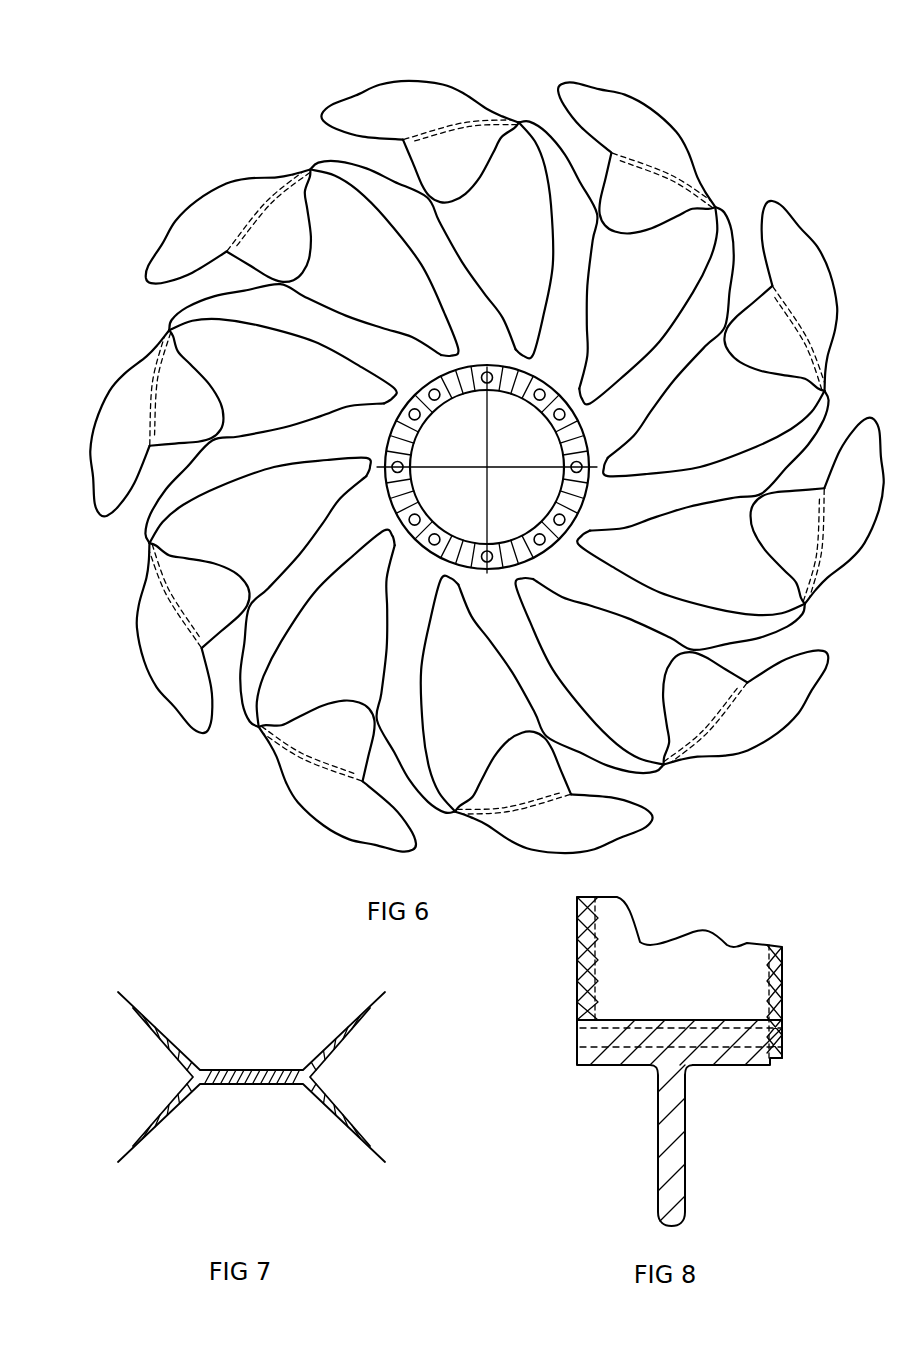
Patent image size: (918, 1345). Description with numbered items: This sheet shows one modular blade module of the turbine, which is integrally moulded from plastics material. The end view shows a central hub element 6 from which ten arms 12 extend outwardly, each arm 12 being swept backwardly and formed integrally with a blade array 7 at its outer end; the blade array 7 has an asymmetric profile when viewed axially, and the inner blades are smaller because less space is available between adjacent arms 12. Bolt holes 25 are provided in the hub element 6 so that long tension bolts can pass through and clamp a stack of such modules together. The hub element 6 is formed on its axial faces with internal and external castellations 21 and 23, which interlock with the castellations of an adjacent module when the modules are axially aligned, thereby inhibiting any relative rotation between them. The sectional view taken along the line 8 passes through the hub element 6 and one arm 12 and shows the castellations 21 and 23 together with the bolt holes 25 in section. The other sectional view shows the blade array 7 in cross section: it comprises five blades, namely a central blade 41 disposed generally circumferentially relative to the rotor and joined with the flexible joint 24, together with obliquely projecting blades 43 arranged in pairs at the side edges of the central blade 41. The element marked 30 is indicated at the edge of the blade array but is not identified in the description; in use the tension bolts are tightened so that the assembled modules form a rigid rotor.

In FIG. 8, the hub element 6 is at (632, 1068).
In FIG. 6, the blade array 7 is at (365, 92).
In FIG. 6, the section line 8— 8 is at (487, 467).
In FIG. 6, the arm 12 is at (458, 293).
In FIG. 8, the arm 12 is at (682, 1150).
In FIG. 8, the internal castellation 21 is at (585, 958).
In FIG. 6, the external castellation 23 is at (515, 563).
In FIG. 8, the external castellation 23 is at (782, 968).
In FIG. 6, the flexible joint 24 is at (660, 757).
In FIG. 6, the bolt hole 25 is at (487, 372).
In FIG. 8, the bolt hole 25 is at (607, 1038).
In FIG. 6, the blade edge 30 is at (597, 330).
In FIG. 6, the central blade 41 is at (710, 735).
In FIG. 7, the central blade 41 is at (255, 1068).
In FIG. 6, the obliquely projecting blade 43 is at (800, 677).
In FIG. 7, the obliquely projecting blade 43 is at (135, 1010).